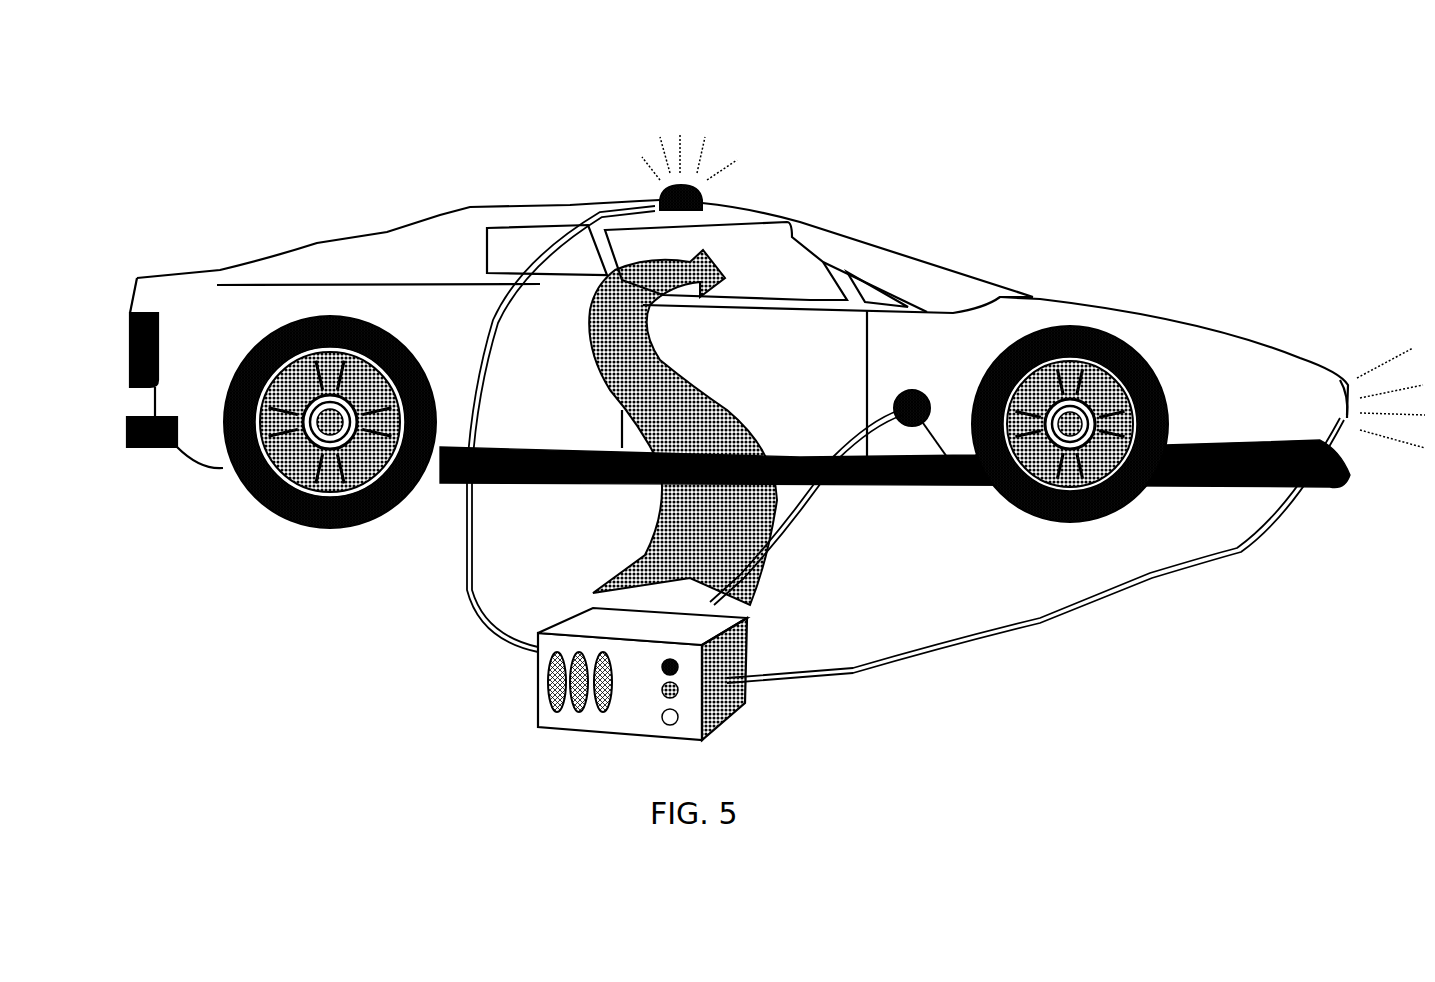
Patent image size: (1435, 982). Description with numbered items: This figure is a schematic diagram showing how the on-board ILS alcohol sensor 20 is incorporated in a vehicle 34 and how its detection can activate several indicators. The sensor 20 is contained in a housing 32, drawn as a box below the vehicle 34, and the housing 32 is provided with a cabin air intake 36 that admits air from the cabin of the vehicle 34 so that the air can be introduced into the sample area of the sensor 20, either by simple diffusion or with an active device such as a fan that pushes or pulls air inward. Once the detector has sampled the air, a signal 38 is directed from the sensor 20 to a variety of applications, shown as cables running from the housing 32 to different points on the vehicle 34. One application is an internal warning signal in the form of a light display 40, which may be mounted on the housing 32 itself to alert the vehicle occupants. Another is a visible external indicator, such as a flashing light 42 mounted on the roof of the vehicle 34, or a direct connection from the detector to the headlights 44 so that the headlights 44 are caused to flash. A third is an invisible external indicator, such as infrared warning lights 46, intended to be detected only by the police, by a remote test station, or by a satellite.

The on-board ILS alcohol sensor 20 is at (665, 703).
The housing 32 is at (637, 713).
The vehicle 34 is at (335, 258).
The cabin air intake 36 is at (577, 712).
The signal 38 is at (462, 557).
The light display 40 is at (677, 697).
The flashing light 42 is at (660, 193).
The headlights 44 is at (1367, 377).
The invisible external indicator warning lights 46 is at (965, 485).